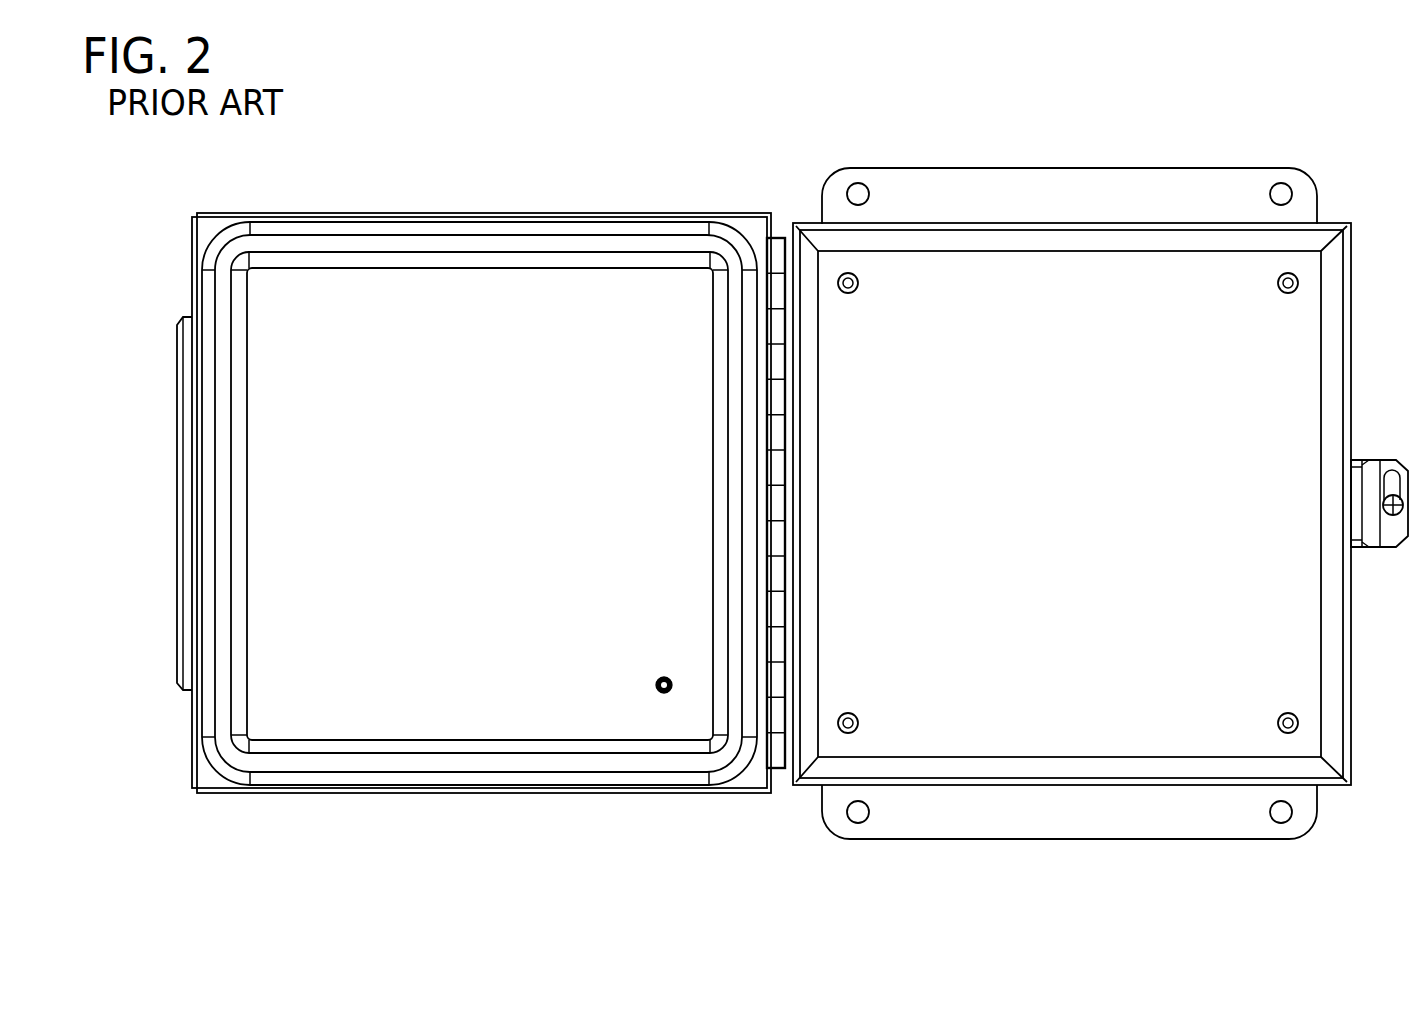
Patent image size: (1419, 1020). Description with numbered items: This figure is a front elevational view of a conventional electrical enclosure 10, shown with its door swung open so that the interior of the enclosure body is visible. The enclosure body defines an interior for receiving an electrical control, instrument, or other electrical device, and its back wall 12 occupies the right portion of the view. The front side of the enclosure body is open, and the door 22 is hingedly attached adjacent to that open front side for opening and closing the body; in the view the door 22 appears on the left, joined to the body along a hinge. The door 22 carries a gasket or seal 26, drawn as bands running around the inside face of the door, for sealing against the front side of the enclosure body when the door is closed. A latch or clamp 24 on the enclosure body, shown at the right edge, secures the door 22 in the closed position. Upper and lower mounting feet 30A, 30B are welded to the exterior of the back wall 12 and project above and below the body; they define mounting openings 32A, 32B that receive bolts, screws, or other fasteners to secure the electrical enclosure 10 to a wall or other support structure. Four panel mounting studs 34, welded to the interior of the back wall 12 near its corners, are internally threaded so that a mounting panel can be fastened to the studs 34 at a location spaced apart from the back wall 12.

The electrical enclosure 10 is at (953, 100).
The back wall 12 is at (1086, 540).
The door 22 is at (492, 213).
The latch or clamp 24 is at (1401, 460).
The gasket or seal 26 is at (378, 767).
The upper mounting foot 30A is at (1219, 168).
The lower mounting foot 30B is at (1062, 839).
The mounting openings 32A is at (858, 183).
The mounting openings 32B is at (862, 823).
The panel mounting studs 34 is at (841, 277).